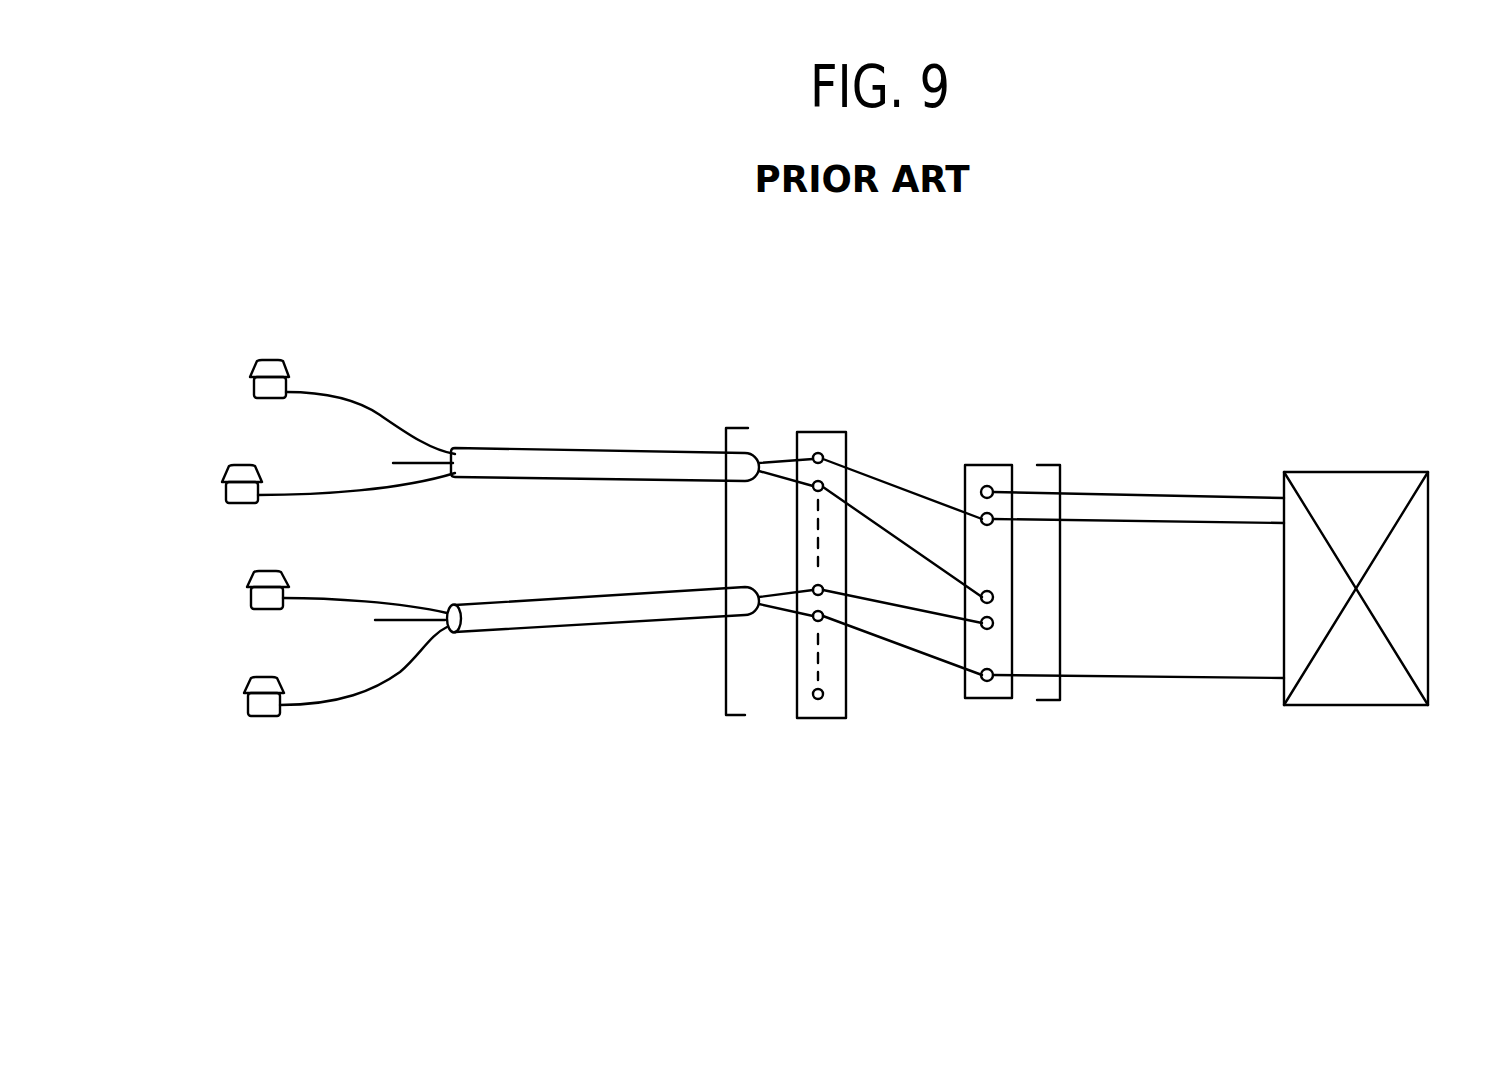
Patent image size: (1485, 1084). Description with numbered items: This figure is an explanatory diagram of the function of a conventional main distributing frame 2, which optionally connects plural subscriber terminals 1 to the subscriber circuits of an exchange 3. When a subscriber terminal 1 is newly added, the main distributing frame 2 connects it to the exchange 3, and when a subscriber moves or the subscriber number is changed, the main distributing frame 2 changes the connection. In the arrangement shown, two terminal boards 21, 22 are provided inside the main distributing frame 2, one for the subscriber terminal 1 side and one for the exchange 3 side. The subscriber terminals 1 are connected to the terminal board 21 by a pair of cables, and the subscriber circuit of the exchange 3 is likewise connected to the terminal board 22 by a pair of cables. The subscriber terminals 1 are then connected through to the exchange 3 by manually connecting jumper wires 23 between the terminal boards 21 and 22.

The subscriber terminal 1 is at (473, 500).
The main distributing frame 2 is at (889, 584).
The exchange 3 is at (1221, 537).
The terminal board 21 is at (811, 718).
The terminal board 22 is at (990, 700).
The jumper wires 23 is at (906, 650).